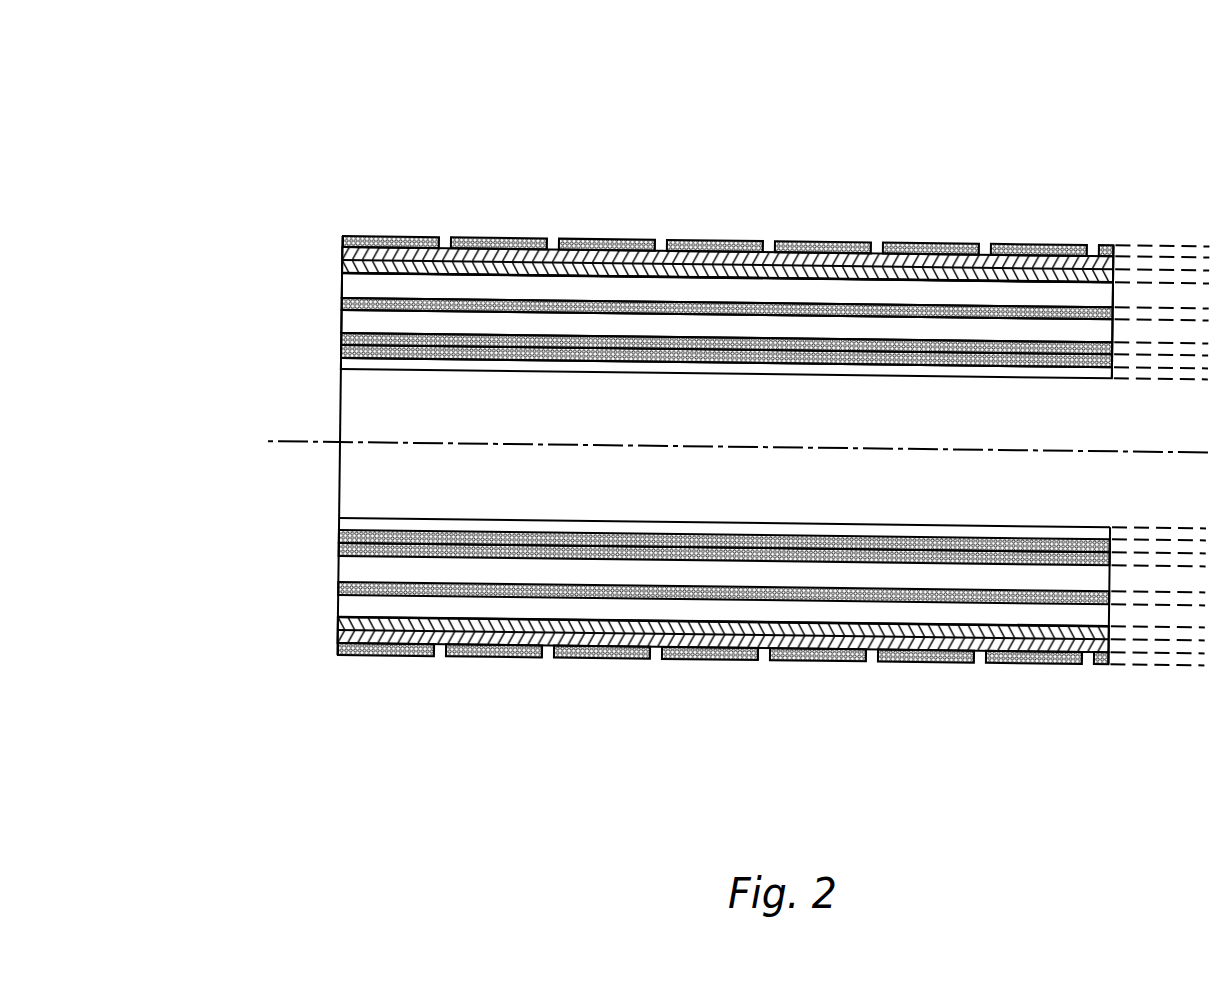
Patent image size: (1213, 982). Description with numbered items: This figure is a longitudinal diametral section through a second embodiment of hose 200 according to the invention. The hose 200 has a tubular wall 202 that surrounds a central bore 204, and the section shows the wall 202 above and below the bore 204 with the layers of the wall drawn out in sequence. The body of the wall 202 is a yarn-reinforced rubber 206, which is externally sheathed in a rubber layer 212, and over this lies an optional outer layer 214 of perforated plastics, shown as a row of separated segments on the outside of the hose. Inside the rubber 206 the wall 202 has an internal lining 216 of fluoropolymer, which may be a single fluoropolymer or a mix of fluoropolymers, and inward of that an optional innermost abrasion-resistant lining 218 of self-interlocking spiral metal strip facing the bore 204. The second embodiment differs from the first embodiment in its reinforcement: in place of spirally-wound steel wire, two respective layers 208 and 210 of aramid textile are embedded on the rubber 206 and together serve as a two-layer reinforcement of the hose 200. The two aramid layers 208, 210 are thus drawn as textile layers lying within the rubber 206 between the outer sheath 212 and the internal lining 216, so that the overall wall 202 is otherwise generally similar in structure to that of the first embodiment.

The hose 200 is at (297, 120).
The tubular wall 202 is at (330, 517).
The bore 204 is at (430, 507).
The yarn-reinforced rubber 206 is at (340, 262).
The layer of aramid textile 208 is at (340, 320).
The layer of aramid textile 210 is at (340, 277).
The rubber layer 212 is at (340, 248).
The outer layer of perforated plastics 214 is at (422, 236).
The internal lining 216 is at (340, 350).
The innermost abrasion-resistant lining 218 is at (340, 367).